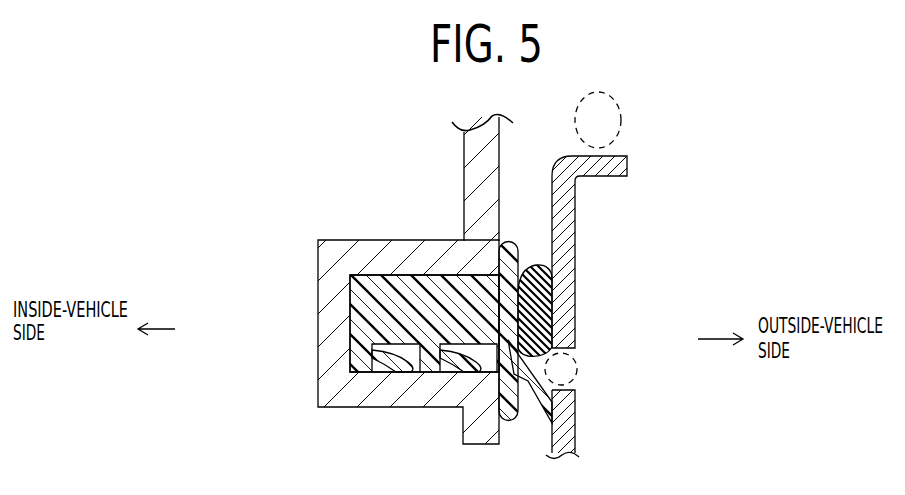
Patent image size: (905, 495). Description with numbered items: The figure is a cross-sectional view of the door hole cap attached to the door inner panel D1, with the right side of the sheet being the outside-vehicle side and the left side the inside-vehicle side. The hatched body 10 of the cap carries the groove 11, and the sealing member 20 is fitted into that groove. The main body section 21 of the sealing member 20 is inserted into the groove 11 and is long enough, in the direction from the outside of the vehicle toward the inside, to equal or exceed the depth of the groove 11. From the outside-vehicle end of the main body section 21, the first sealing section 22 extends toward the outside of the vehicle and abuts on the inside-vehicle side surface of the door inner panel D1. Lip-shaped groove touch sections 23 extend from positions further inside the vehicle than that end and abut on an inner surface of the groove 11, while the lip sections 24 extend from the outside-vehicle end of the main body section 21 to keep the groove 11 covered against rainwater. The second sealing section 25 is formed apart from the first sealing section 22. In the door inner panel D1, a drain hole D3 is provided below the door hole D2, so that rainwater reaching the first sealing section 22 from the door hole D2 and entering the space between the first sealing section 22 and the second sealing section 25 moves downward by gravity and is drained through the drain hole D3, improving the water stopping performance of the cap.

The panel 10 is at (487, 135).
The groove 11 is at (337, 275).
The sealing member 20 is at (441, 360).
The main body section 21 is at (390, 318).
The first sealing section 22 is at (552, 308).
The groove touch sections 23 is at (370, 362).
The lip sections 24 is at (500, 257).
The second sealing section 25 is at (552, 408).
The door inner panel D1 is at (575, 191).
The door hole D2 is at (622, 117).
The drain hole D3 is at (577, 377).